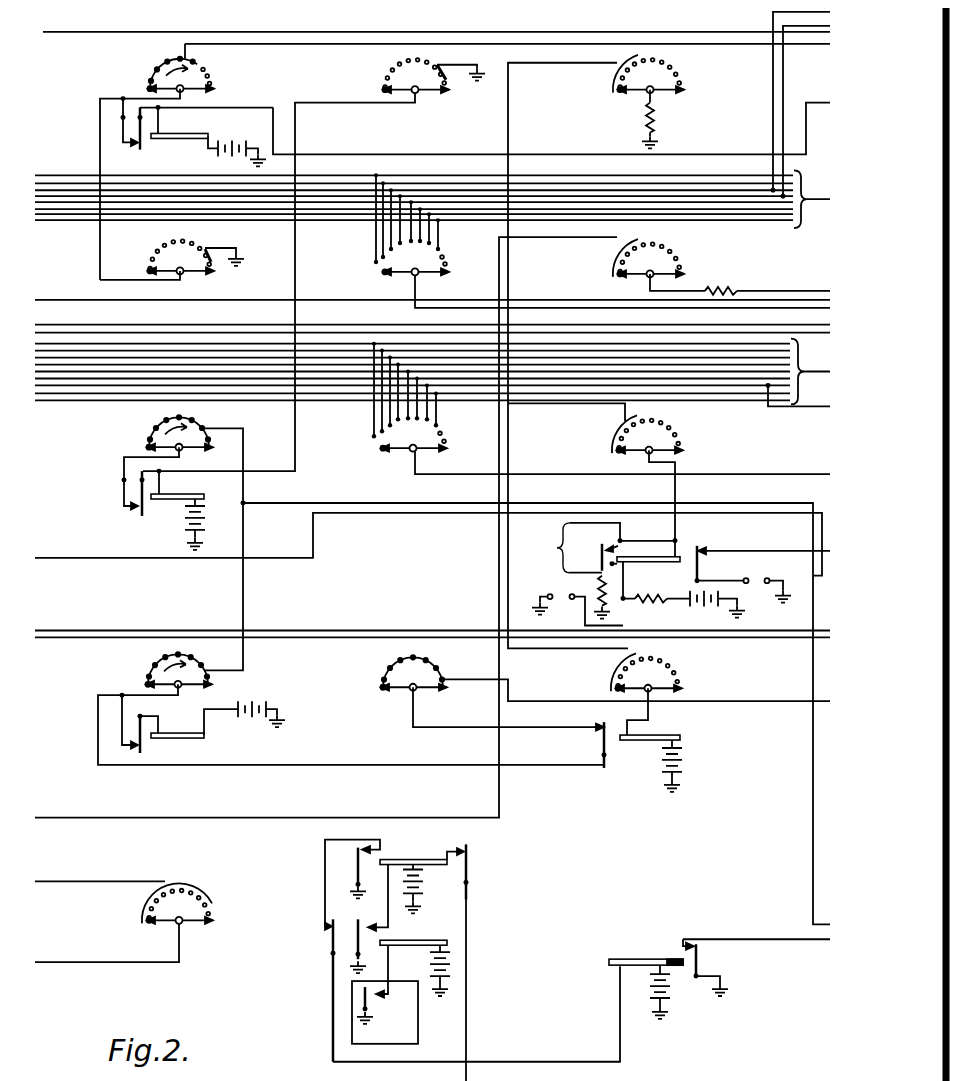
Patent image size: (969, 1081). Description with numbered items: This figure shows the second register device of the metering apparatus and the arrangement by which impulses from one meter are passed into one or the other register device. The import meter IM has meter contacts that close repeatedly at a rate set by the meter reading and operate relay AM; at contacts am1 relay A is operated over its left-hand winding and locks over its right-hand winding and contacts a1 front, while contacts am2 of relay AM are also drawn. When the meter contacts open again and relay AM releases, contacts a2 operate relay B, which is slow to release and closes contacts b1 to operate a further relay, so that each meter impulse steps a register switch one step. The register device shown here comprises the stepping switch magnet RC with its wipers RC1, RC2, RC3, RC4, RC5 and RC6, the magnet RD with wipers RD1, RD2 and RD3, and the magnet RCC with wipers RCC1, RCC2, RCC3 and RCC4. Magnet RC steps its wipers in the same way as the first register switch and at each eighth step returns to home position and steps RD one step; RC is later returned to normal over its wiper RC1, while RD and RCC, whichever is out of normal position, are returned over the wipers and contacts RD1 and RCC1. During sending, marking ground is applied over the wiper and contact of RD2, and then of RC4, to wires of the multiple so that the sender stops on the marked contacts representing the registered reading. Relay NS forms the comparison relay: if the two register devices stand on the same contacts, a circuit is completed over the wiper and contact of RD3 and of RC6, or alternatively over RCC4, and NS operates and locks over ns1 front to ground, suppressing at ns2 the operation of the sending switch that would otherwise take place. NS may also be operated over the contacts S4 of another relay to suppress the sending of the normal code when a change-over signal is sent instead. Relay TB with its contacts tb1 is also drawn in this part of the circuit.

The wiper RC1 of switch RC RC1 is at (158, 162).
The magnet RC is at (197, 131).
The second RC selector switch RC2 is at (172, 264).
The third RC selector switch (bridging) RC3 is at (434, 90).
The wiper RC4 of switch RC RC4 is at (412, 231).
The fifth RC selector switch RC5 is at (649, 102).
The wiper RC6 of switch RC RC6 is at (721, 267).
The wiper RD1 of switch RD RD1 is at (181, 441).
The magnet RD is at (164, 498).
The wiper RD2 of switch RD RD2 is at (411, 404).
The wiper RD3 of switch RD RD3 is at (663, 485).
The contacts s4 of relay S S4 is at (594, 571).
The contacts ns1 of relay NS ns1 is at (610, 567).
The relay NS is at (681, 579).
The contacts ns2 of relay NS ns2 is at (763, 564).
The wiper RCC1 of switch RCC RCC1 is at (184, 677).
The magnet RCC is at (351, 724).
The second RCC selector switch RCC2 is at (493, 692).
The third RCC selector switch RCC3 is at (669, 675).
The TB relay contact 1 tb1 is at (610, 745).
The TB relay TB is at (651, 740).
The wiper RCC4 of switch RCC RCC4 is at (183, 910).
The relay A is at (394, 885).
The contacts a2 of relay A a2 is at (361, 873).
The contacts a1 of relay A a1 is at (472, 872).
The relay AM is at (413, 958).
The contacts am1 of relay AM am1 is at (363, 946).
The AM relay contact 2 am2 is at (319, 990).
The import meter IM is at (352, 1012).
The relay B is at (646, 980).
The contacts b1 of relay B b1 is at (756, 967).